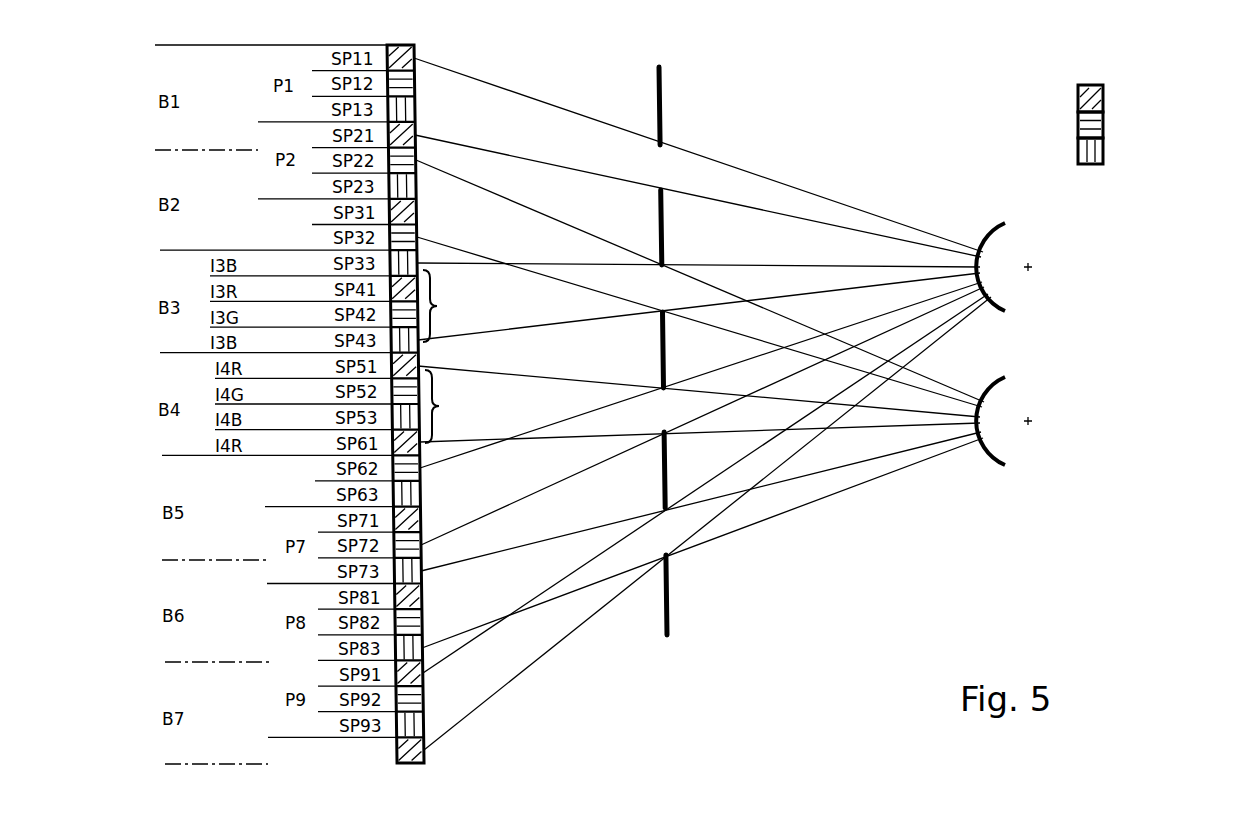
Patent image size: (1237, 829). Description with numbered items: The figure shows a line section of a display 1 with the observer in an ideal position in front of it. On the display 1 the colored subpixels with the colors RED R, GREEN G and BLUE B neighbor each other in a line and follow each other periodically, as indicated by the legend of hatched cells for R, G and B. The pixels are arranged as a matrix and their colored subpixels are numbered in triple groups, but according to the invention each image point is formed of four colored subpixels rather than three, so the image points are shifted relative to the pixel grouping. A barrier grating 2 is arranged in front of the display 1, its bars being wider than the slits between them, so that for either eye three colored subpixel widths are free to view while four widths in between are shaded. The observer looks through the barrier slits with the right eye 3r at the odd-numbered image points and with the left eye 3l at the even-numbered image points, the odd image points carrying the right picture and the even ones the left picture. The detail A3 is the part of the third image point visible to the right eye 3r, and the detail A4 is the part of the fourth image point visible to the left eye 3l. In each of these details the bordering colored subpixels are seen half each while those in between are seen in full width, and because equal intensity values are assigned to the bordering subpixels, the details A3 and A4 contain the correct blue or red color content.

The display 1 is at (409, 764).
The barrier grating 2 is at (667, 636).
The right eye 3r is at (1027, 267).
The left eye 3l is at (1027, 421).
The detail A3 is at (450, 306).
The detail A4 is at (452, 406).
The RED colored subpixel R is at (1103, 98).
The GREEN colored subpixel G is at (1103, 125).
The BLUE colored subpixel B is at (1103, 150).